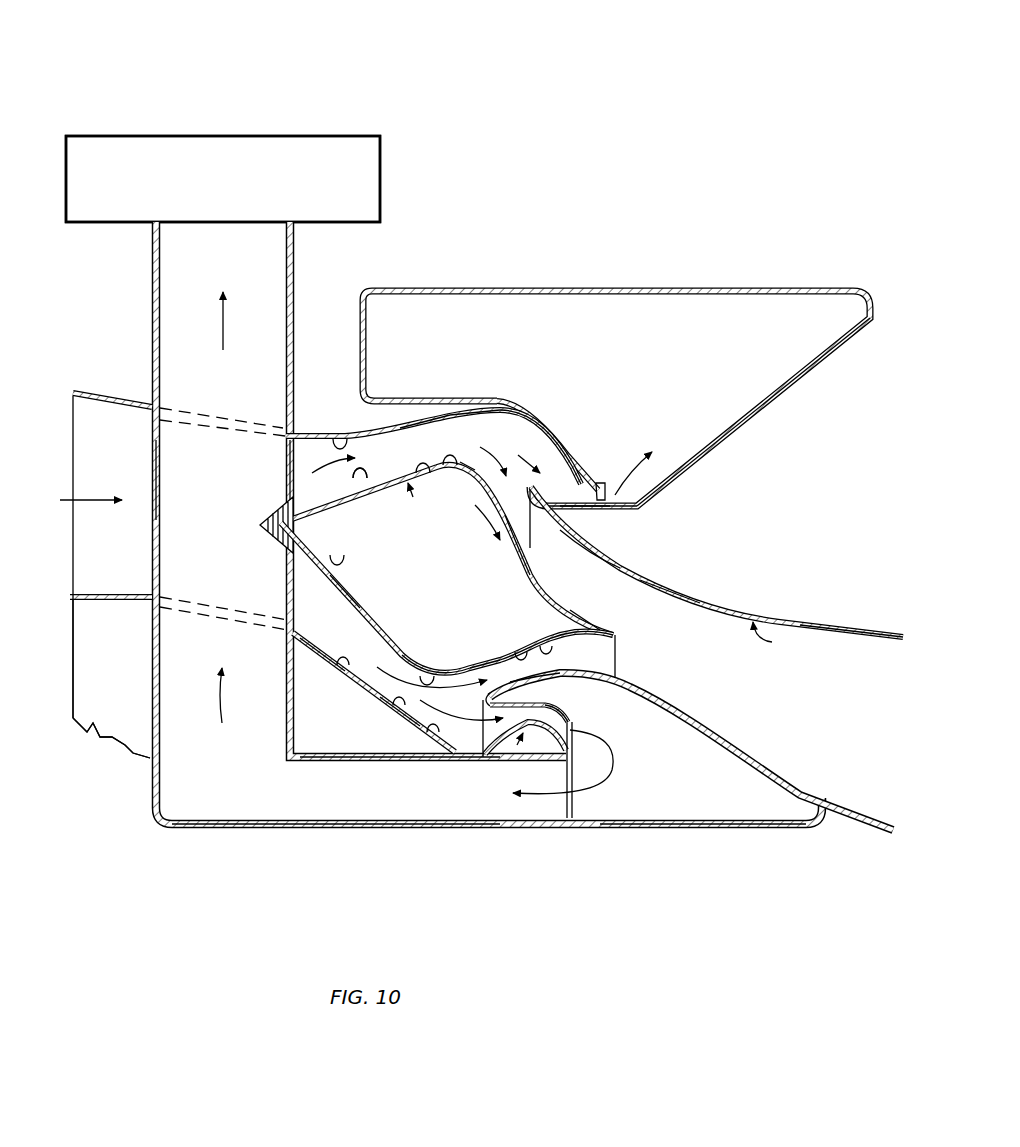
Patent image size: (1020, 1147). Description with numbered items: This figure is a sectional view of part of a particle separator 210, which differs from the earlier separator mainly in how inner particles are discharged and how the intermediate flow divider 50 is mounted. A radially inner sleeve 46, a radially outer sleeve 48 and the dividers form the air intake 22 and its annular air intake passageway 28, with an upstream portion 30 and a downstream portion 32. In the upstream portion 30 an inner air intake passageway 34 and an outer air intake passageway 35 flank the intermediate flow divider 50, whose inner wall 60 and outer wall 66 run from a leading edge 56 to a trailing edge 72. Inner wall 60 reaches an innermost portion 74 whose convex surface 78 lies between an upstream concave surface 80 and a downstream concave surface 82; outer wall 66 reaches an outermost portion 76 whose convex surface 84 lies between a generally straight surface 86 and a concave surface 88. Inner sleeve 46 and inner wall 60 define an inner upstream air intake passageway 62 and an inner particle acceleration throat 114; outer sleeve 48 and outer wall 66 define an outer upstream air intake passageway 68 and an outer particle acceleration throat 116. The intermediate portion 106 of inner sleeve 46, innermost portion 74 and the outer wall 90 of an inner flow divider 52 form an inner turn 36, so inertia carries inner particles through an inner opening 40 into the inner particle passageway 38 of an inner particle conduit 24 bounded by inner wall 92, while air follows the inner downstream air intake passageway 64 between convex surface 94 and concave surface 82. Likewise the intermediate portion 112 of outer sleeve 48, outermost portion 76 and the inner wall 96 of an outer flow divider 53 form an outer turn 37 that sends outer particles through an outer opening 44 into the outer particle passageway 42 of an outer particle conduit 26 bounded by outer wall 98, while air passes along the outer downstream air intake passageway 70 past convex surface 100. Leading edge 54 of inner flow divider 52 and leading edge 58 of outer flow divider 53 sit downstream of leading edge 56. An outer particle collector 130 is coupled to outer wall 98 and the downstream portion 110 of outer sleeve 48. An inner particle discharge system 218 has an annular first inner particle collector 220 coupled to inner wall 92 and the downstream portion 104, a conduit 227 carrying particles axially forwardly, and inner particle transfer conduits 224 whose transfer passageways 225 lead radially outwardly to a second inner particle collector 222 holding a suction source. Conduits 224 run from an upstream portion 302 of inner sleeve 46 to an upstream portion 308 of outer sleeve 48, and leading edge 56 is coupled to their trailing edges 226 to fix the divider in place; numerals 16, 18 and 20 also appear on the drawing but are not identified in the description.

The particle separator 210 is at (253, 73).
The second inner particle collector 222 is at (313, 137).
The riser passage 18 is at (225, 333).
The transfer passageways 225 is at (163, 515).
The inner particle transfer conduits 224 is at (168, 464).
The first inner particle collector 220 is at (643, 830).
The conduit 227 is at (385, 830).
The inner particle discharge system 218 is at (272, 837).
The air intake 22 is at (310, 430).
The intermediate portion 106 is at (387, 755).
The radially inner turn 36 is at (427, 755).
The radially inner opening 40 is at (453, 758).
The upstream portion 308 is at (108, 393).
The inlet flow 16 is at (91, 498).
The upstream portion 30 is at (112, 593).
The upstream portion 302 is at (132, 602).
The outer particle collector 130 is at (498, 287).
The housing sloped wall 20 is at (662, 486).
The outer particle passageway 42 is at (615, 515).
The radially outer wall 98 is at (588, 512).
The intermediate portion 112 is at (497, 407).
The radially outer sleeve 48 is at (384, 414).
The outer particle acceleration throat 116 is at (428, 430).
The radially outer turn 37 is at (462, 428).
The radially outer opening 44 is at (540, 452).
The radially outer particle conduit 26 is at (573, 475).
The radially outer air intake passageway 35 is at (340, 440).
The downstream portion 110 is at (597, 492).
The leading edge 58 is at (494, 482).
The generally straight surface 86 is at (367, 500).
The intermediate flow divider 50 is at (325, 512).
The concave surface 88 is at (512, 560).
The radially outermost portion 76 is at (448, 500).
The convex surface 84 is at (470, 495).
The radially outer wall 66 is at (405, 503).
The outer upstream air intake passageway 68 is at (357, 486).
The upstream concave surface 80 is at (345, 562).
The leading edge 56 is at (267, 523).
The trailing edges 226 is at (290, 467).
The radially inner wall 60 is at (392, 650).
The inner upstream air intake passageway 62 is at (357, 603).
The convex surface 78 is at (423, 663).
The radially innermost portion 74 is at (455, 672).
The downstream concave surface 82 is at (495, 648).
The inner downstream air intake passageway 64 is at (533, 640).
The trailing edge 72 is at (617, 638).
The convex surface 100 is at (548, 520).
The outer downstream air intake passageway 70 is at (575, 598).
The air intake passageway 28 is at (777, 627).
The downstream portion 32 is at (822, 635).
The radially inner wall 96 is at (605, 548).
The radially outer flow divider 53 is at (665, 597).
The radially inner sleeve 46 is at (360, 702).
The radially inner air intake passageway 34 is at (343, 660).
The inner particle acceleration throat 114 is at (397, 718).
The downstream portion 104 is at (512, 752).
The radially inner particle conduit 24 is at (535, 774).
The inner particle passageway 38 is at (572, 722).
The leading edge 54 is at (485, 703).
The radially inner flow divider 52 is at (678, 705).
The convex surface 94 is at (547, 668).
The radially outer wall 90 is at (548, 682).
The radially inner wall 92 is at (562, 708).